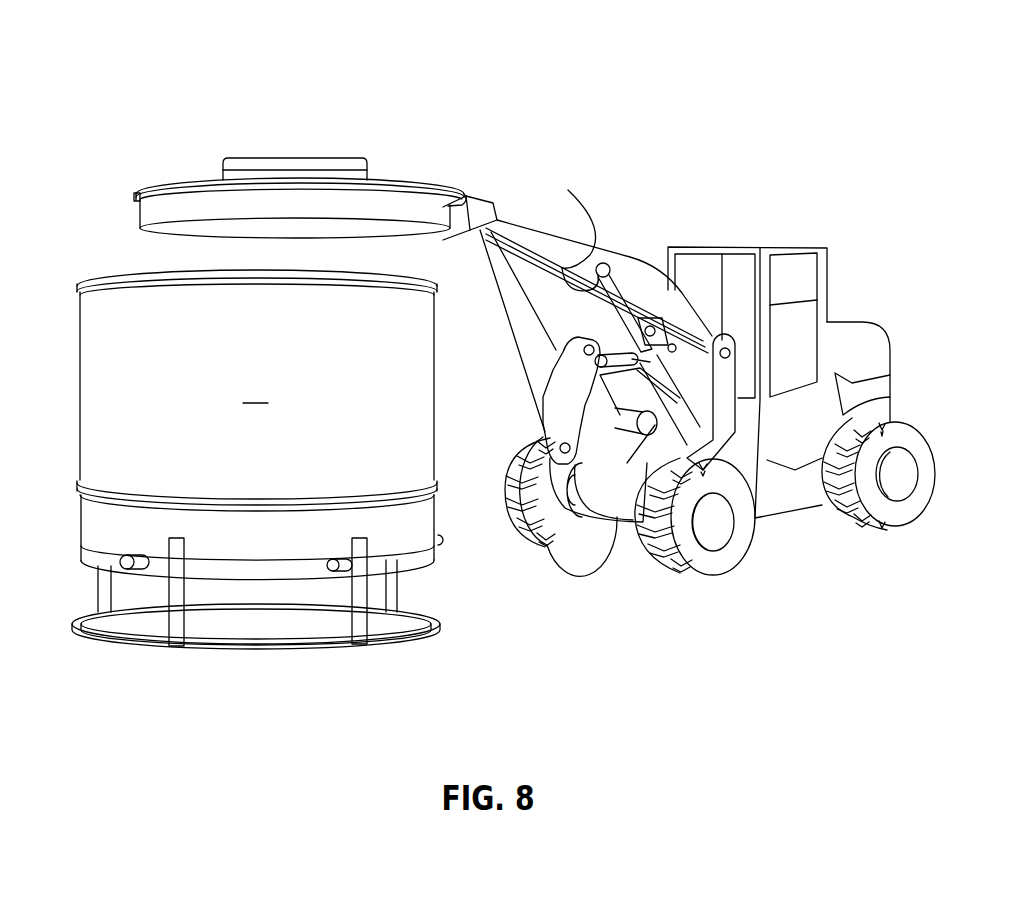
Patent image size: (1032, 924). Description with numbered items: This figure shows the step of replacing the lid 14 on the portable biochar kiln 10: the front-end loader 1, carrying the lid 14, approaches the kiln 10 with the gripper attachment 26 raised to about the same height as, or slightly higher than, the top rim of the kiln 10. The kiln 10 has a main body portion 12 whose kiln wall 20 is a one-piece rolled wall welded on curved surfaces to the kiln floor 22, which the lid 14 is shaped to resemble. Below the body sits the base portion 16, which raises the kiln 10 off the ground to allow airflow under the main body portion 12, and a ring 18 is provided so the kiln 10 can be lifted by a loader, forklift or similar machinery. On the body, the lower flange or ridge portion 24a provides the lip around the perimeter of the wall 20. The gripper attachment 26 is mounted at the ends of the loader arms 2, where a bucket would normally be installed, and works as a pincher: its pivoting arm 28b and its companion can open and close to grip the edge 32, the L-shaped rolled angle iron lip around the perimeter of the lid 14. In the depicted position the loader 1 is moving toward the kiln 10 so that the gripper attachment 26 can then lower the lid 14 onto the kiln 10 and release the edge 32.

The front-end loader 1 is at (766, 204).
The arms 2 is at (562, 268).
The biochar kiln 10 is at (186, 84).
The main body portion 12 is at (437, 403).
The lid 14 is at (197, 180).
The base portion 16 is at (388, 648).
The ring 18 is at (84, 612).
The kiln wall 20 is at (255, 392).
The kiln floor 22 is at (251, 612).
The lower flange 24a is at (442, 487).
The gripper attachment 26 is at (501, 180).
The arm of gripper attachment 28b is at (415, 181).
The edge 32 is at (138, 196).